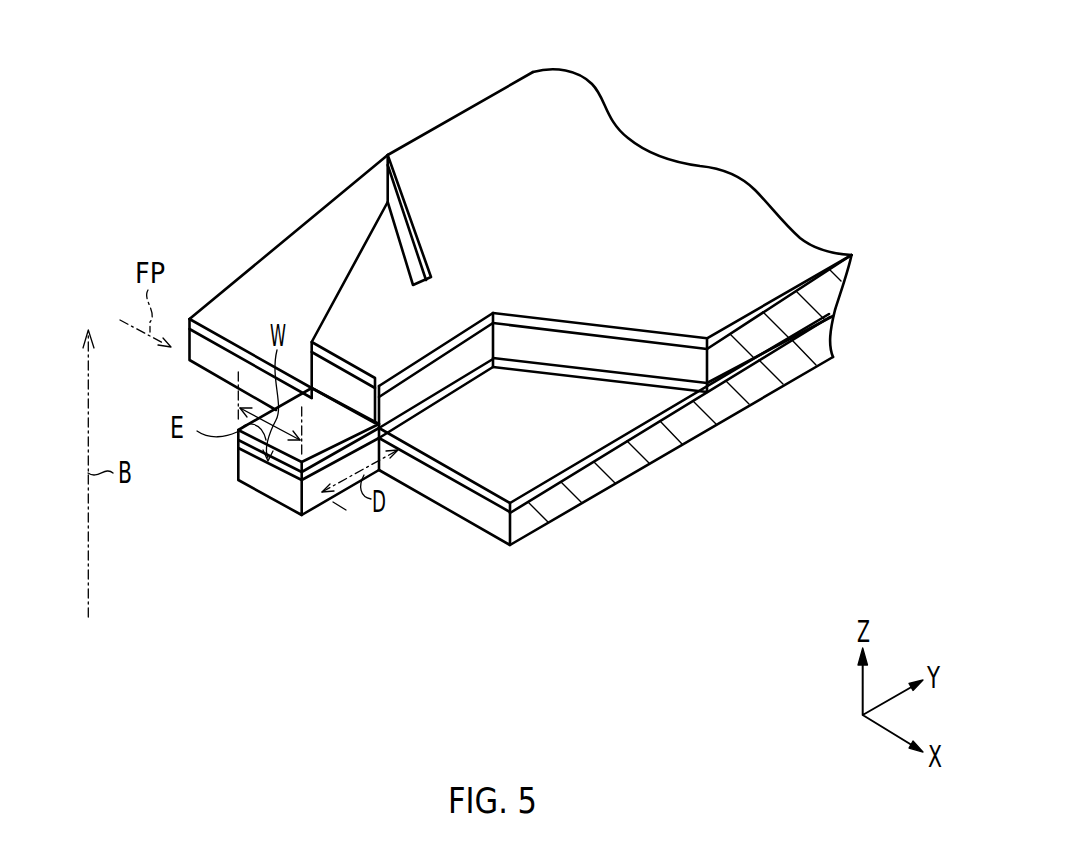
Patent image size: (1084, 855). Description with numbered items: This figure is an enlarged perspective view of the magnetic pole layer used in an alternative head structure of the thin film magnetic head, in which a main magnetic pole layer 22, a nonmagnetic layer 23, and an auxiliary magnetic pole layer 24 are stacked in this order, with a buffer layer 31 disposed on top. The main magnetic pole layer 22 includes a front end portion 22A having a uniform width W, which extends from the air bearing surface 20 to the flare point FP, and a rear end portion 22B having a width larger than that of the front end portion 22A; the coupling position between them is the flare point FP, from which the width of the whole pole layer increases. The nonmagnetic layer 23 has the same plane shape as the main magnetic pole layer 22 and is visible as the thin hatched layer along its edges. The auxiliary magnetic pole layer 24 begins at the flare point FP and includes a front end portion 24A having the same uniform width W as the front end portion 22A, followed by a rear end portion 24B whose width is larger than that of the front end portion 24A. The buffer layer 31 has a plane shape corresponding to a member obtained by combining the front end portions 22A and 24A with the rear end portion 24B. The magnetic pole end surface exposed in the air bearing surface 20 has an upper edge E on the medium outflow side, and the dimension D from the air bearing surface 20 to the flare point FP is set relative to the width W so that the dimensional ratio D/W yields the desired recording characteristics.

The buffer layer 31 is at (475, 125).
The air bearing surface 20 is at (282, 539).
The main magnetic pole layer 22 is at (315, 559).
The front end portion 22A is at (268, 485).
The rear end portion 22B is at (360, 487).
The auxiliary magnetic pole layer 24 is at (615, 456).
The front end portion 24A is at (443, 370).
The rear end portion 24B is at (602, 350).
The nonmagnetic layer 23 is at (822, 328).